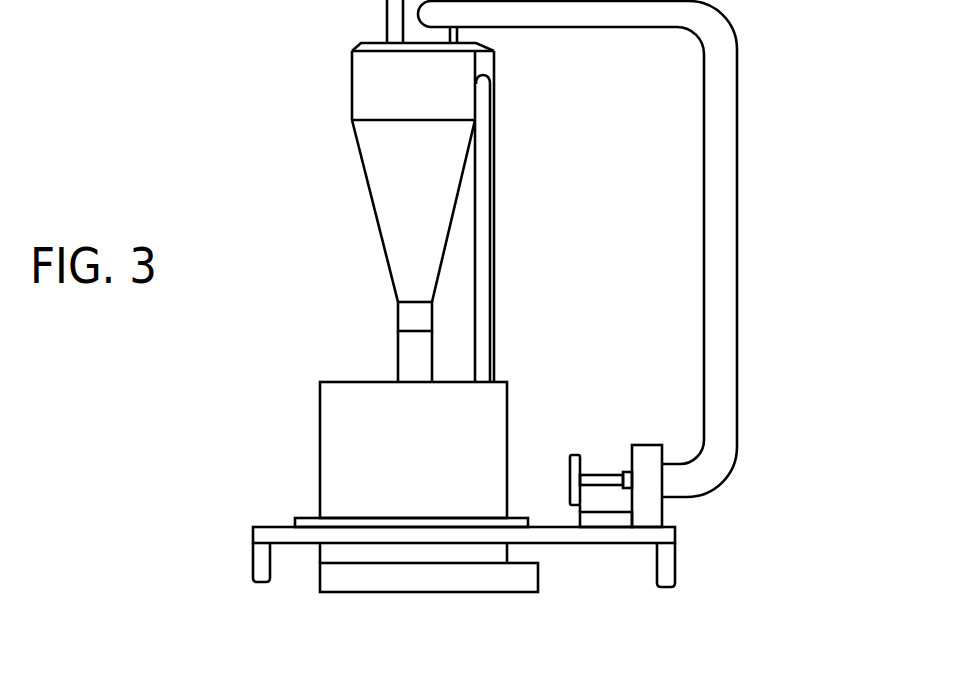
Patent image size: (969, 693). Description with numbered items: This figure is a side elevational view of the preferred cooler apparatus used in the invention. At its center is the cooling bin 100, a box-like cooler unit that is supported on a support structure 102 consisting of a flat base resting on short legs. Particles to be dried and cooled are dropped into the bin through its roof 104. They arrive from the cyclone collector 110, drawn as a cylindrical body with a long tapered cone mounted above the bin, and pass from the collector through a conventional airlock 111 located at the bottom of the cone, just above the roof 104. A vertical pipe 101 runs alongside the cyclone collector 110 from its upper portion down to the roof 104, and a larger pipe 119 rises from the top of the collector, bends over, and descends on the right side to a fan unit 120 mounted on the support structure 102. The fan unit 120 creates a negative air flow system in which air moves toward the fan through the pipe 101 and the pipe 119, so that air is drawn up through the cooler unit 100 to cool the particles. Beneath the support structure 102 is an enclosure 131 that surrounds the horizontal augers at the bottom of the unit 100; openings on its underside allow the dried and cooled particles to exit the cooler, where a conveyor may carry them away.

The cooling bin 100 is at (306, 458).
The pipe 101 is at (494, 223).
The support structure 102 is at (252, 533).
The roof 104 is at (338, 382).
The cyclone collector 110 is at (358, 145).
The airlock 111 is at (398, 323).
The pipe 119 is at (737, 160).
The fan unit 120 is at (645, 432).
The enclosure 131 is at (522, 592).